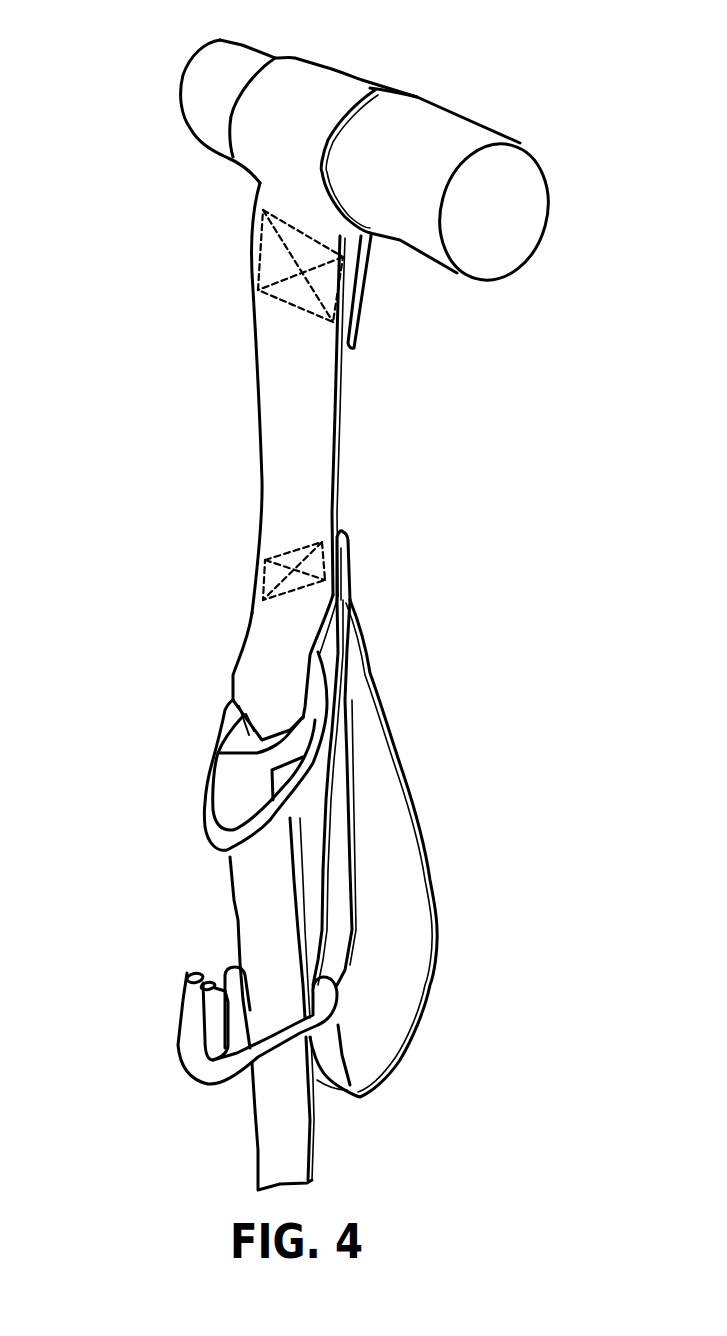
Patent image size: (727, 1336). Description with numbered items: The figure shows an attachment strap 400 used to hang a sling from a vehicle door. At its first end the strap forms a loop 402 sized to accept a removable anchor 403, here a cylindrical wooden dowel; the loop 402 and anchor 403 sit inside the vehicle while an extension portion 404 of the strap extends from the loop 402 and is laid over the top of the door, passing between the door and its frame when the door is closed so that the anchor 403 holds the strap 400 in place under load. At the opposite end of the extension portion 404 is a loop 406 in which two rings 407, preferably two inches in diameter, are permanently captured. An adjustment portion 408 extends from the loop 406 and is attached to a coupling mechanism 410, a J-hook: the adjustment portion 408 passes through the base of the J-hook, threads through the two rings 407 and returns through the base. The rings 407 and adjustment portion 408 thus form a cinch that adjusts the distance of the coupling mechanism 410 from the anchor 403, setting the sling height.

The attachment strap 400 is at (157, 451).
The loop 402 is at (343, 67).
The removable anchor 403 is at (472, 122).
The extension portion 404 is at (340, 427).
The loop 406 is at (243, 642).
The rings 407 is at (213, 733).
The adjustment portion 408 is at (440, 885).
The coupling mechanism 410 is at (180, 1013).